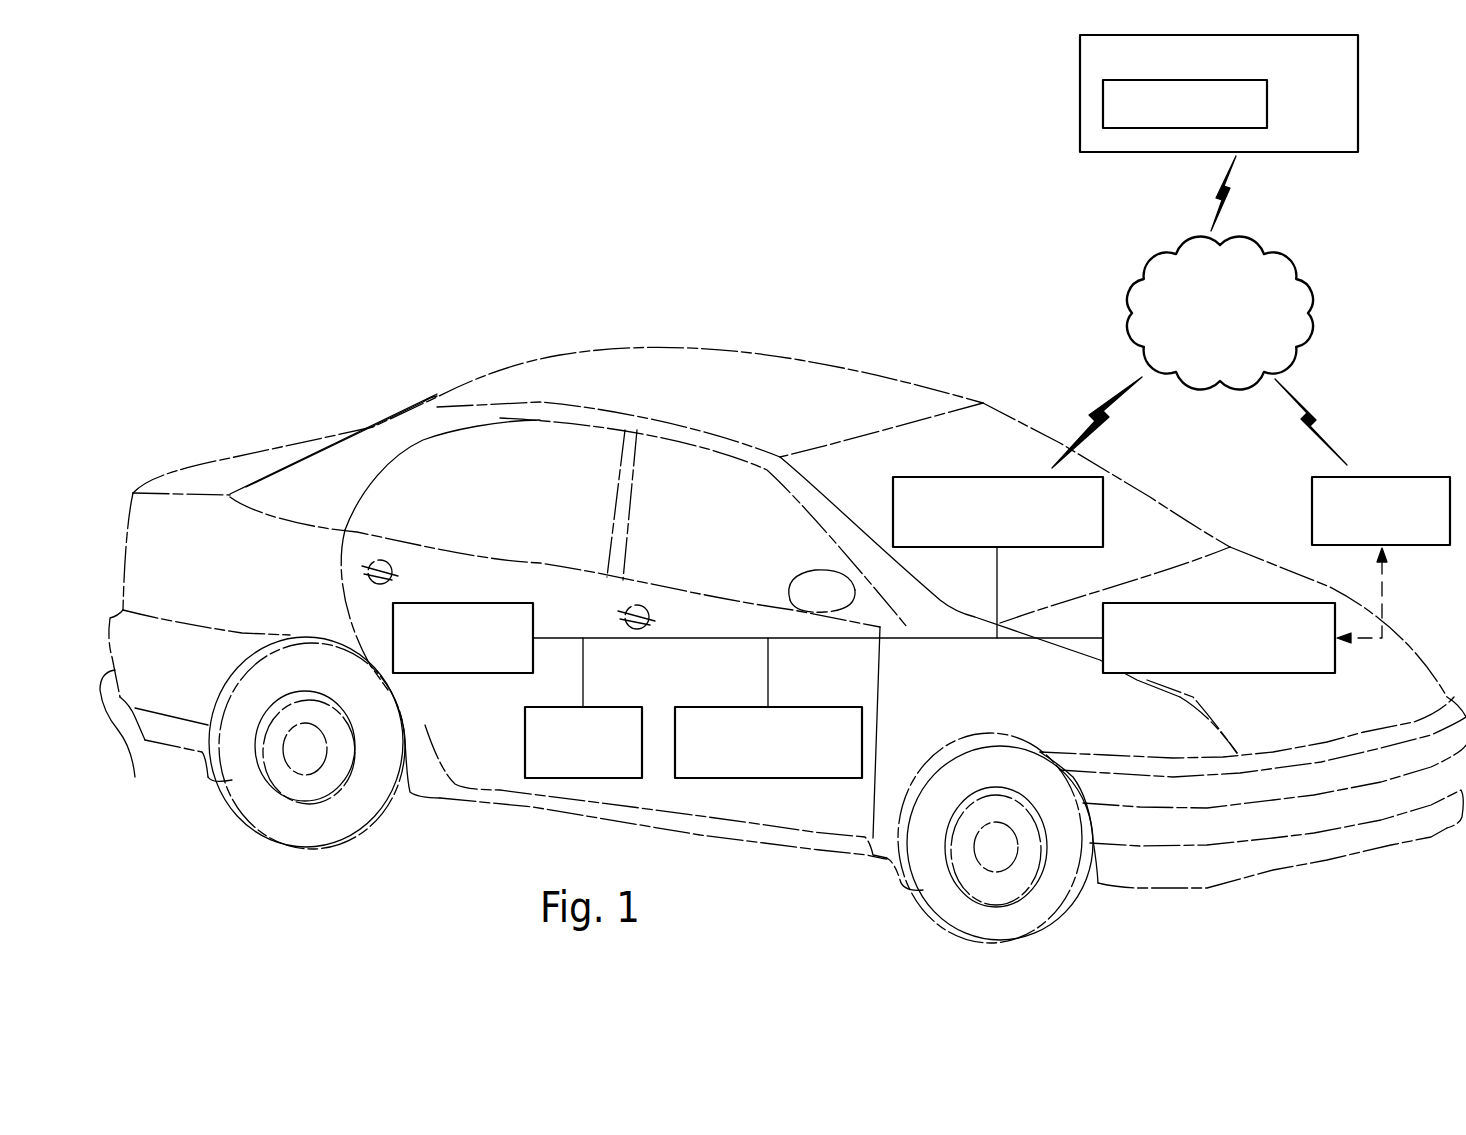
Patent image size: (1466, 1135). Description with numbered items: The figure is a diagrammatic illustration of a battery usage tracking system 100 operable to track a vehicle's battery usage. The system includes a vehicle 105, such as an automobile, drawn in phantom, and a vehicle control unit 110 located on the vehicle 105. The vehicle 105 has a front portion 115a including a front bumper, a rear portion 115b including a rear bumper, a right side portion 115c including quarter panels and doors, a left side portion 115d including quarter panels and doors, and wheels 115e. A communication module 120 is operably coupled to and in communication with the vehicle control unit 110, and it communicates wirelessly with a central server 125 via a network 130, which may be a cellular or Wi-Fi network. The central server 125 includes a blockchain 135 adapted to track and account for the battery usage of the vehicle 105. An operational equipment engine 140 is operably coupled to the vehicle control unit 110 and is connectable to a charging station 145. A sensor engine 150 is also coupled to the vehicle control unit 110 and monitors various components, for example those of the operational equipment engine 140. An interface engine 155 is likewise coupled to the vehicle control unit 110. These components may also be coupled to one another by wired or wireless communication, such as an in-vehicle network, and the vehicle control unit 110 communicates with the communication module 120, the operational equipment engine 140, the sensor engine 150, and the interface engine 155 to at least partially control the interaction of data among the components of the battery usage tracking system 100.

The battery usage tracking system 100 is at (436, 205).
The vehicle 105 is at (596, 349).
The vehicle control unit 110 is at (733, 706).
The front portion 115a is at (1383, 850).
The rear portion 115b is at (136, 795).
The right side portion 115c is at (497, 800).
The left side portion 115d is at (873, 370).
The wheels 115e is at (283, 838).
The communication module 120 is at (990, 477).
The central server 125 is at (1256, 93).
The network 130 is at (1312, 292).
The blockchain 135 is at (1268, 106).
The operational equipment engine 140 is at (1252, 675).
The charging station 145 is at (1382, 476).
The sensor engine 150 is at (618, 706).
The interface engine 155 is at (470, 675).